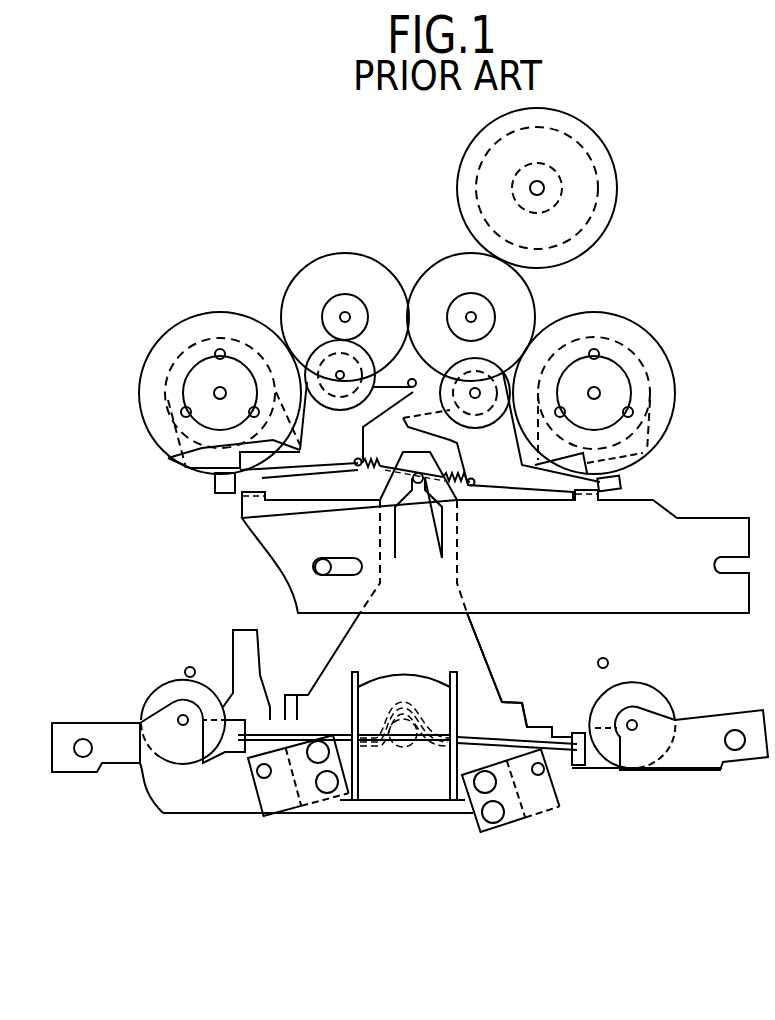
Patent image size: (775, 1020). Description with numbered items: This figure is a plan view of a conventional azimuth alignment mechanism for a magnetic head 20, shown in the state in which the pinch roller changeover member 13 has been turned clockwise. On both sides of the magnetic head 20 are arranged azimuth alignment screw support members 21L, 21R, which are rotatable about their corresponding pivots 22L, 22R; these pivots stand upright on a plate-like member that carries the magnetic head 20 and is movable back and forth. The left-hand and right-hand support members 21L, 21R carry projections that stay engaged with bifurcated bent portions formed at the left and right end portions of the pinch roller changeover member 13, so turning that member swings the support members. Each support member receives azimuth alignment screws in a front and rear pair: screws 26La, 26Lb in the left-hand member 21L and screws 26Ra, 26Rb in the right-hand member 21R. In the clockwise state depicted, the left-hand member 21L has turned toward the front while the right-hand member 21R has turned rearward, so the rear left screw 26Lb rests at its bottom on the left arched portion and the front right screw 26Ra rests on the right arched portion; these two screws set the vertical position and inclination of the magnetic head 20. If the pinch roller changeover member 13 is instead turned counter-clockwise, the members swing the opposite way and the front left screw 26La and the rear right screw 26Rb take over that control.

The pinch roller changeover member 13 is at (488, 697).
The magnetic head 20 is at (405, 682).
The left-hand azimuth alignment screw support member 21L is at (270, 823).
The right-hand azimuth alignment screw support member 21R is at (550, 817).
The left pivot 22L is at (258, 772).
The right pivot 22R is at (563, 772).
The front left azimuth alignment screw 26La is at (318, 745).
The rear left azimuth alignment screw 26Lb is at (327, 787).
The front right azimuth alignment screw 26Ra is at (483, 783).
The rear right azimuth alignment screw 26Rb is at (495, 817).